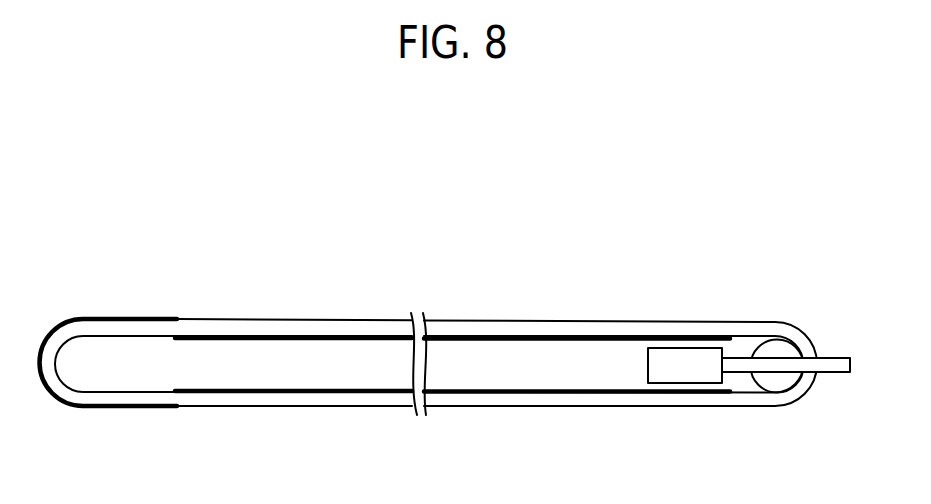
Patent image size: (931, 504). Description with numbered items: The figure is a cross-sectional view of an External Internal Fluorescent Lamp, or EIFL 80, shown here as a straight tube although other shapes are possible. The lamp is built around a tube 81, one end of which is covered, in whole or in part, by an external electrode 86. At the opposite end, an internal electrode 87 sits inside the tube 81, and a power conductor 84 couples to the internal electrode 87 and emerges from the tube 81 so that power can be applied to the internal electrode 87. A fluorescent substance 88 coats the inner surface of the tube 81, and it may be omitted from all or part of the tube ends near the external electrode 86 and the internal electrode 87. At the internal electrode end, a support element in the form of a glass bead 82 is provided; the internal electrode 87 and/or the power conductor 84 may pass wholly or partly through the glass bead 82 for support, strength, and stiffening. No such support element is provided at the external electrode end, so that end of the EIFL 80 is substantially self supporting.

The external internal fluorescent lamp 80 is at (490, 287).
The tube 81 is at (358, 322).
The glass bead 82 is at (782, 350).
The power conductor 84 is at (836, 368).
The external electrode 86 is at (123, 317).
The internal electrode 87 is at (687, 378).
The fluorescent substance 88 is at (333, 391).